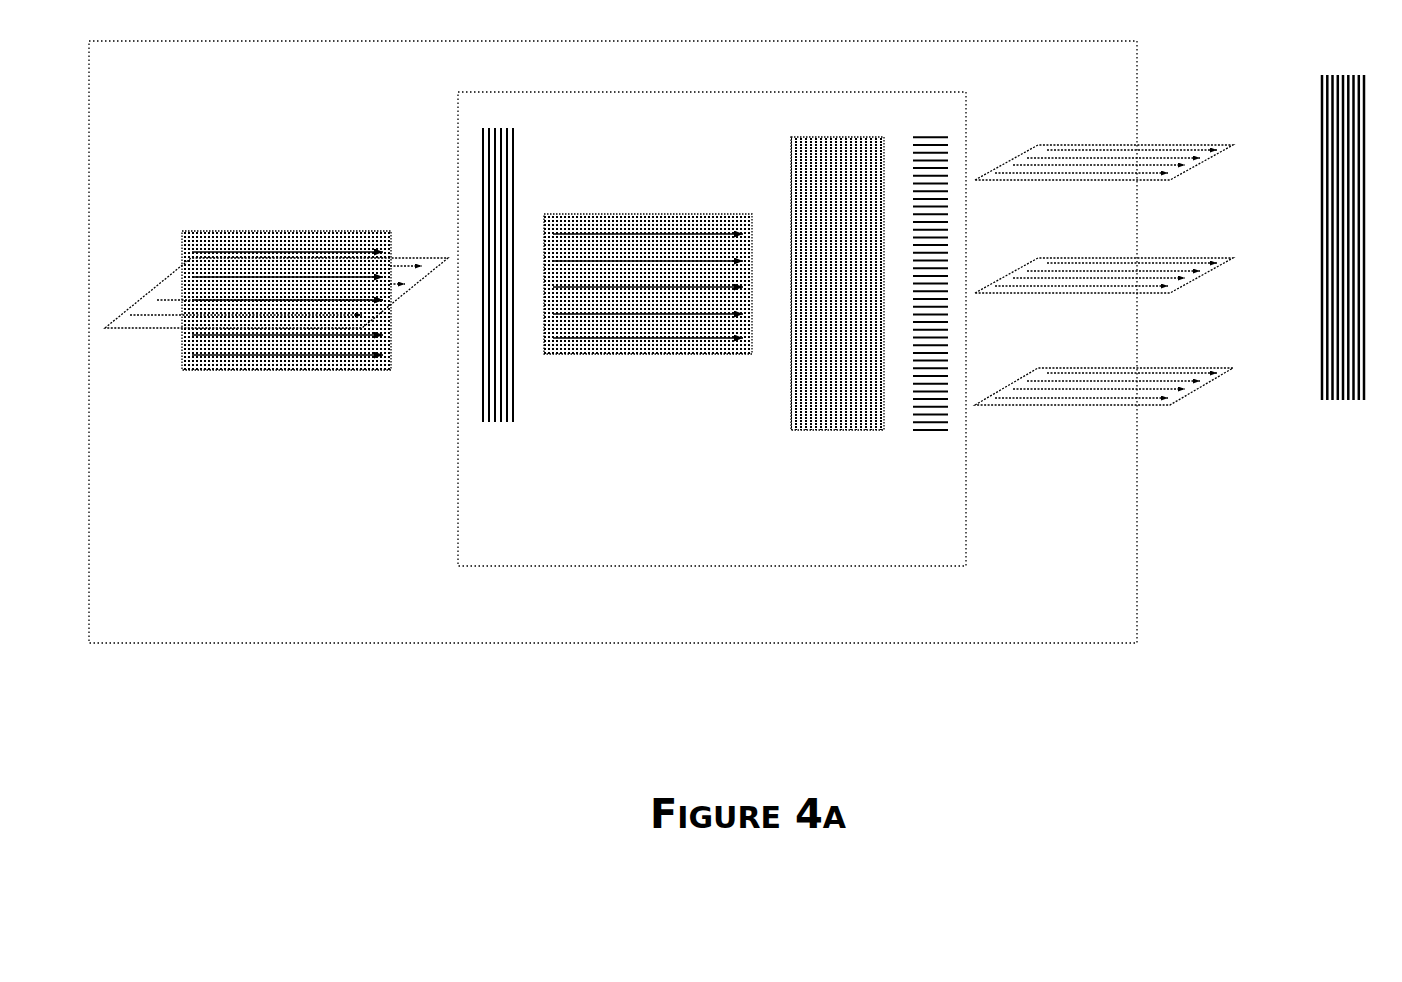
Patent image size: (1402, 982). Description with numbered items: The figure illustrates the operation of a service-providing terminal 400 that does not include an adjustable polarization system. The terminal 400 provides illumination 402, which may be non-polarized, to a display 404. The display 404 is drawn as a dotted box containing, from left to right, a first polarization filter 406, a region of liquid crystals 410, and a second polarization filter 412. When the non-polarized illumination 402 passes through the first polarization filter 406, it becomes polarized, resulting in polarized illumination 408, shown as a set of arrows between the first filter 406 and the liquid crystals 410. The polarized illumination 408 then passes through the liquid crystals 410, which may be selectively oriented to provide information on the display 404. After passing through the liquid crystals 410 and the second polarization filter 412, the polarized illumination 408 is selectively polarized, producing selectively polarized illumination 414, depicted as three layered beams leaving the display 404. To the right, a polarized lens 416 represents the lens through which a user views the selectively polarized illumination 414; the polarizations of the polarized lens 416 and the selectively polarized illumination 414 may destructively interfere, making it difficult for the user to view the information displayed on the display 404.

The service-providing terminal 400 is at (1104, 633).
The illumination 402 is at (279, 211).
The display 404 is at (527, 536).
The first polarization filter 406 is at (530, 158).
The polarized illumination 408 is at (644, 205).
The liquid crystals 410 is at (773, 393).
The second polarization filter 412 is at (931, 443).
The selectively polarized illumination 414 is at (1111, 425).
The polarized lens 416 is at (1353, 423).